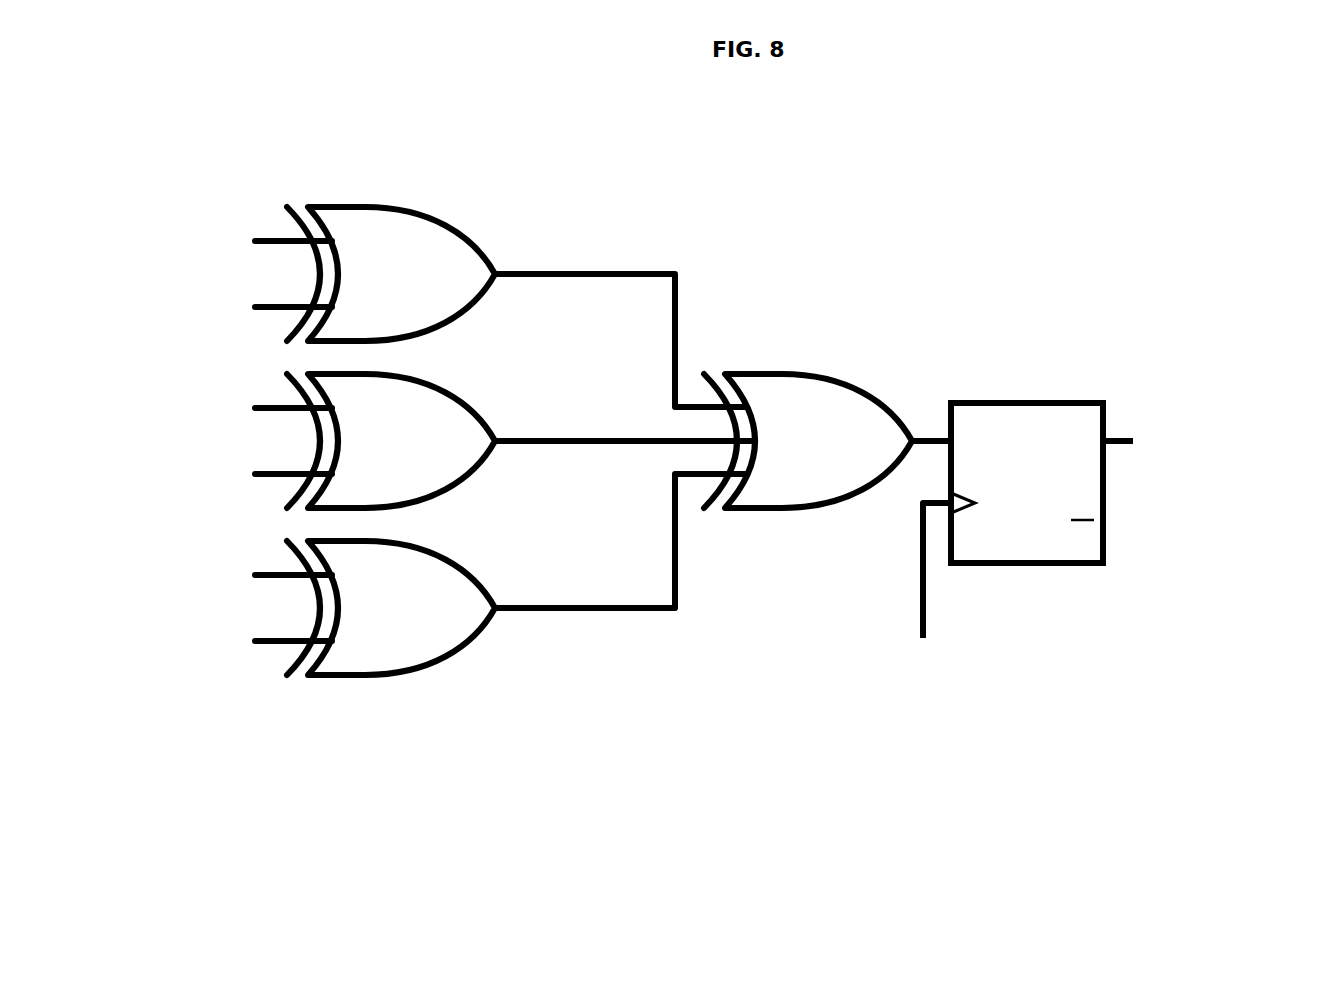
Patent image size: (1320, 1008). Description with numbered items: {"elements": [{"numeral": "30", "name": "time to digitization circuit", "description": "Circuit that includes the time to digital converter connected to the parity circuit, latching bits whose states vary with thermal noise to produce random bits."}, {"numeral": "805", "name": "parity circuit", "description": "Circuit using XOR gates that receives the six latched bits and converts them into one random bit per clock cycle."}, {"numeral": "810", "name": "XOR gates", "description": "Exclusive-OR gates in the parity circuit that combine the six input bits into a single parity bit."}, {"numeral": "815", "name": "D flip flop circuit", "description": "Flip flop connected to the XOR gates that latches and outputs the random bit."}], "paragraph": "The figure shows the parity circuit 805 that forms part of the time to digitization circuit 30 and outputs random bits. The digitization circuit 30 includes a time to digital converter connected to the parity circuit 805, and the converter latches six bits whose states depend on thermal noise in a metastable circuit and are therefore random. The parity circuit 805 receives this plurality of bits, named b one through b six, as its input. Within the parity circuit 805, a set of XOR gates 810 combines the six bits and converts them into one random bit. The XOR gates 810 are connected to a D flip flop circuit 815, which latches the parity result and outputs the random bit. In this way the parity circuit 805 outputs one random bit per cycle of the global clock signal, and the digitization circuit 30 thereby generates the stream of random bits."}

The random bit generator 30 is at (940, 118).
The random bit extraction circuit 805 is at (1124, 755).
The XOR gate tree 810 is at (893, 212).
The D flip-flop 815 is at (1063, 412).